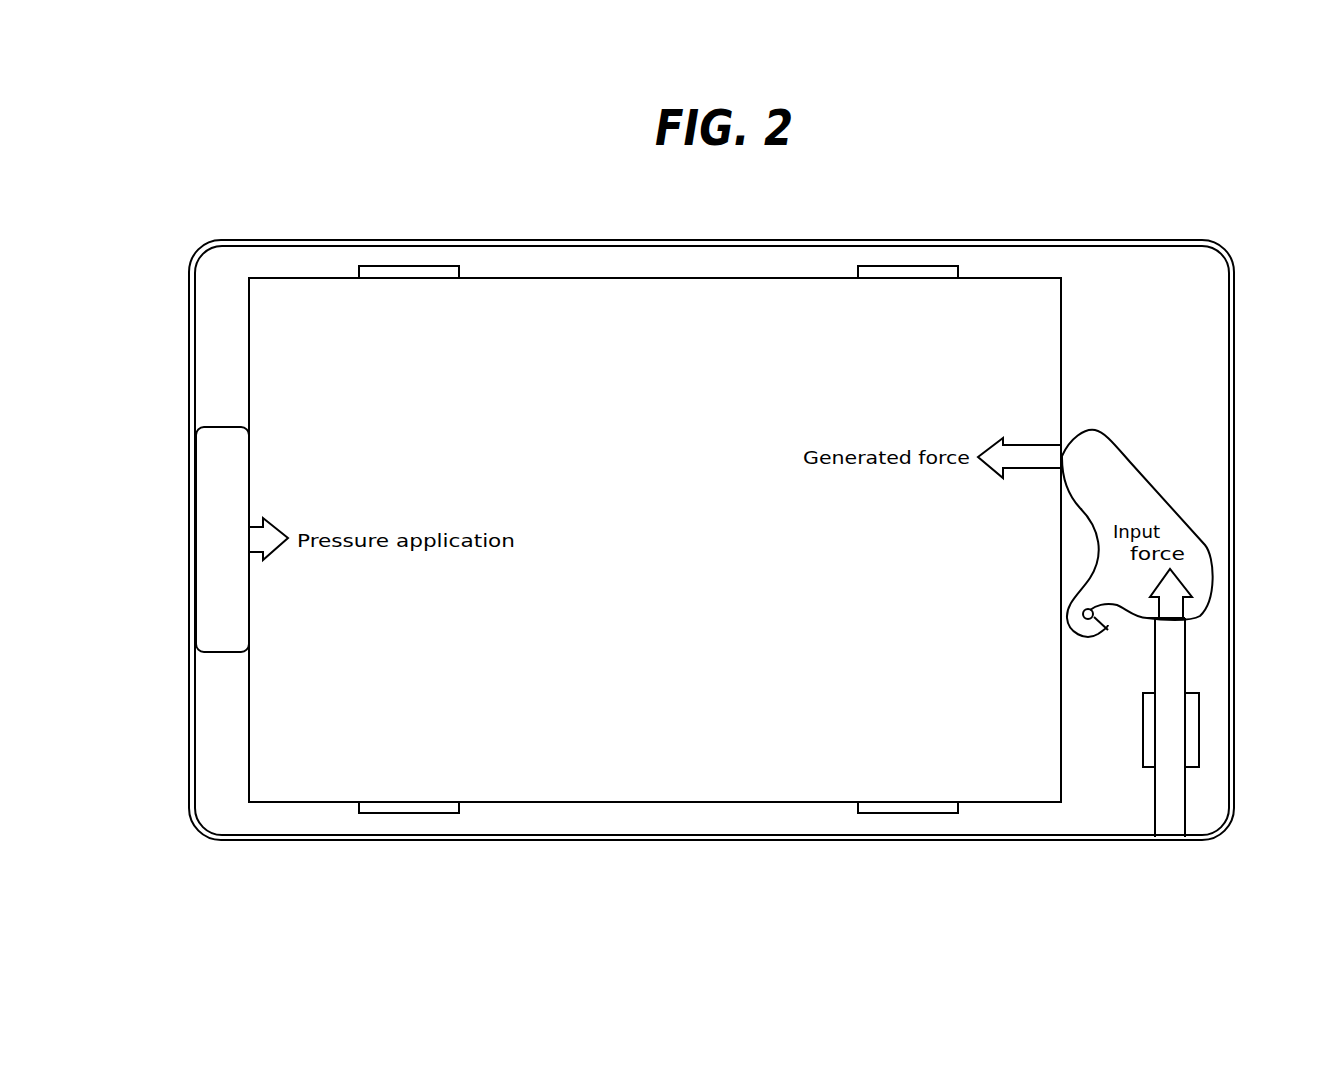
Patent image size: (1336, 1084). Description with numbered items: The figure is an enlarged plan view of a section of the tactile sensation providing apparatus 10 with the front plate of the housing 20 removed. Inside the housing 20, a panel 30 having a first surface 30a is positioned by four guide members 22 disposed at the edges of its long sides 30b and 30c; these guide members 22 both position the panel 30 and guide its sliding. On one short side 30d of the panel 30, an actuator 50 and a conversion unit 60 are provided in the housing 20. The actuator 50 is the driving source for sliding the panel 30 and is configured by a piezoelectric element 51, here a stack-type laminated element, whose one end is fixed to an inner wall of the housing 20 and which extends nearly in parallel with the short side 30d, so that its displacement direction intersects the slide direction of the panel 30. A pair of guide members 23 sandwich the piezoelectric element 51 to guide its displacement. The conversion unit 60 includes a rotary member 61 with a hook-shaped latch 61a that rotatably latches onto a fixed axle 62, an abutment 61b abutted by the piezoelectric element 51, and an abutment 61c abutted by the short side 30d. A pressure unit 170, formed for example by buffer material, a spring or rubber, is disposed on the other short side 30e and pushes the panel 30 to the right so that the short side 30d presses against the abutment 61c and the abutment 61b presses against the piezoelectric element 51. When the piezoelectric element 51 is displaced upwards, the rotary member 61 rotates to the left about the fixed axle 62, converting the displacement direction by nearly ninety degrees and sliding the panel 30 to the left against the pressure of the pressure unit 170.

The electronic device 10 is at (1032, 222).
The housing 20 is at (195, 321).
The guide members 22 is at (400, 266).
The guide members 23 is at (1143, 723).
The panel 30 is at (282, 351).
The panel first surface 30a is at (270, 732).
The long side 30b is at (643, 278).
The long side 30c is at (653, 802).
The short side 30d is at (1062, 337).
The short side 30e is at (249, 693).
The actuator 50 is at (1182, 753).
The piezoelectric element 51 is at (1172, 800).
The conversion unit 60 is at (1144, 520).
The rotary member 61 is at (1144, 520).
The latch 61a is at (1106, 632).
The abutment 61b is at (1185, 638).
The abutment 61c is at (1060, 457).
The fixed axle 62 is at (1083, 616).
The pressure unit 170 is at (217, 543).